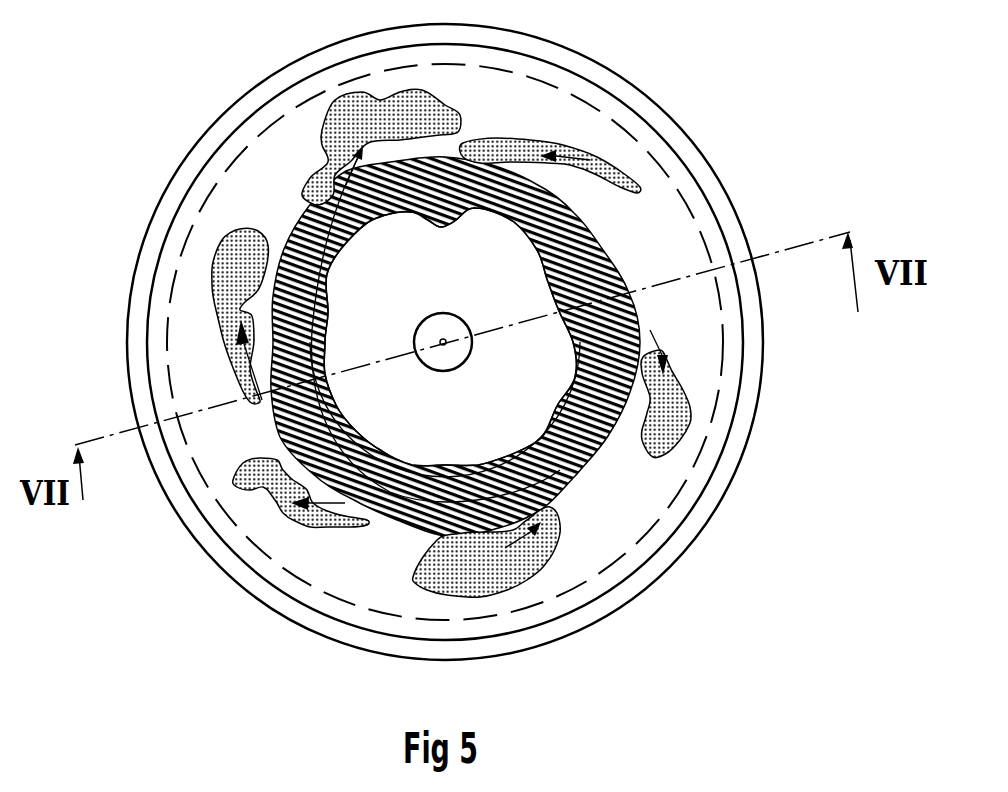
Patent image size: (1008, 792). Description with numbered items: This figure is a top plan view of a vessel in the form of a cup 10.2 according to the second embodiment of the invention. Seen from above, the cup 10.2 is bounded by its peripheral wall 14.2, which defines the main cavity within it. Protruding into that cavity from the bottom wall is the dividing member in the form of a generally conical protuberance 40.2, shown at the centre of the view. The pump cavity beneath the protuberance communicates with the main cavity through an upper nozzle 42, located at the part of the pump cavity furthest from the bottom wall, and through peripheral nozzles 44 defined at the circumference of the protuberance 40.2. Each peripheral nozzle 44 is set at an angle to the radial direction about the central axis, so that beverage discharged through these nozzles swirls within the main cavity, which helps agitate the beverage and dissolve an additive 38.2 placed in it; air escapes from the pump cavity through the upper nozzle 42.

The cup 10.2 is at (112, 115).
The peripheral wall 14.2 is at (662, 553).
The additive 38.2 is at (560, 199).
The protuberance 40.2 is at (473, 298).
The upper nozzle 42 is at (430, 344).
The peripheral nozzles 44 is at (303, 302).